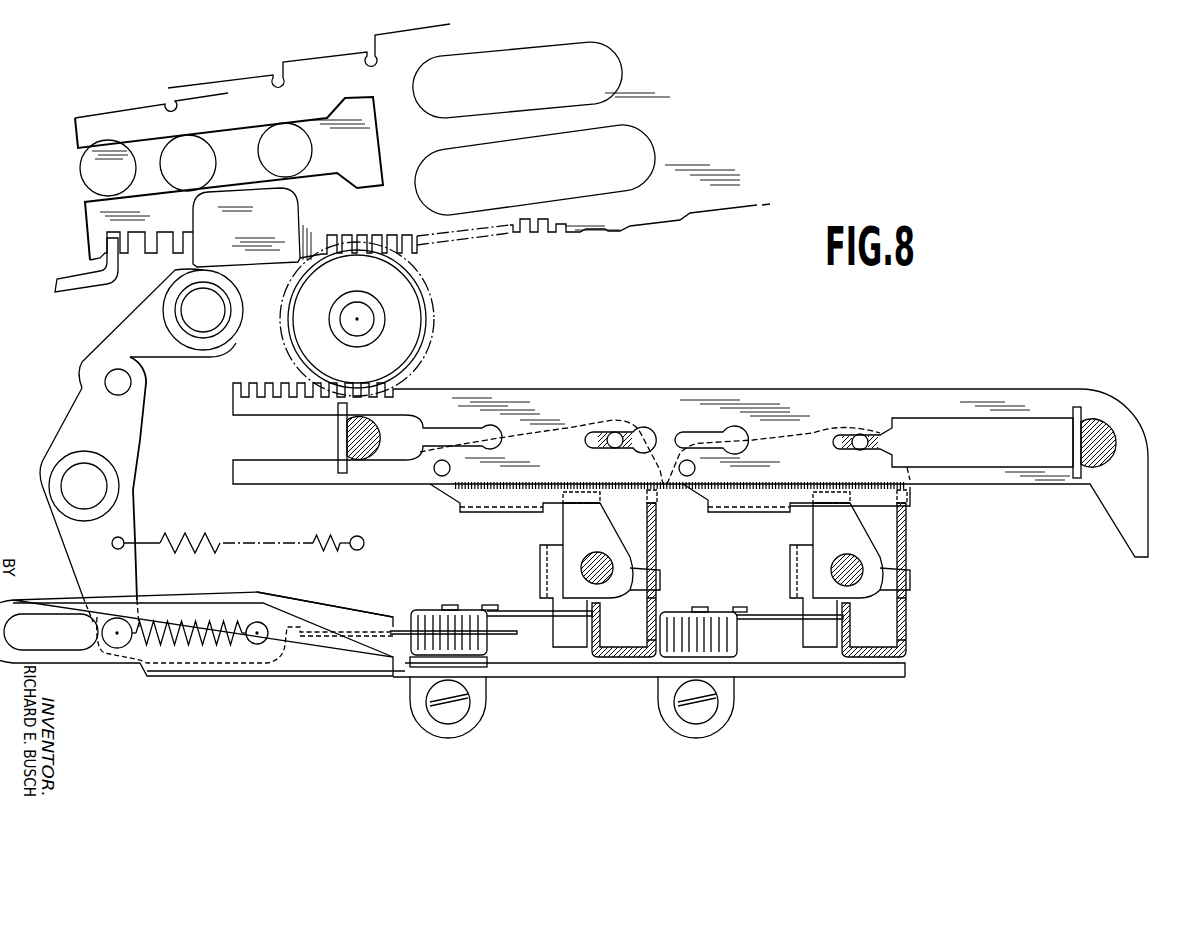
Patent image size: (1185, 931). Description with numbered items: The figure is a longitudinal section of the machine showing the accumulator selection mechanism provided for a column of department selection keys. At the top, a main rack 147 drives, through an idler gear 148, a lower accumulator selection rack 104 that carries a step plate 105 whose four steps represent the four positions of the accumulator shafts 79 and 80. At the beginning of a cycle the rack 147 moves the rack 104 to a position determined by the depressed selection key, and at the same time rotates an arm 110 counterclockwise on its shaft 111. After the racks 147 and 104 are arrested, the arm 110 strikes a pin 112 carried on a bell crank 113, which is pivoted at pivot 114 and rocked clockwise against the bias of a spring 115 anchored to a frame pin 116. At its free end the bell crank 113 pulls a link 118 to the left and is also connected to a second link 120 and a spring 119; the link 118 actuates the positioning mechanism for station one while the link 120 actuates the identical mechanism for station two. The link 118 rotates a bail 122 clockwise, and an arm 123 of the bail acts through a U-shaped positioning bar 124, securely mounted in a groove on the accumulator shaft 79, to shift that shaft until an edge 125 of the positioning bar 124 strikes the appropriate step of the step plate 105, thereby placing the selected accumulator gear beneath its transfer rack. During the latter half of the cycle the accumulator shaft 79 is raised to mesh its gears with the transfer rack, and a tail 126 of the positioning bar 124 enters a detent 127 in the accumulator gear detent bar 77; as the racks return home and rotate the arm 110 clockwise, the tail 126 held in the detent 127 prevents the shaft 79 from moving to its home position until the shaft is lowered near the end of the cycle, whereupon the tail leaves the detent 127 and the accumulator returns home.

The accumulator gear detent bar 77 is at (665, 533).
The accumulator shaft 79 is at (594, 556).
The accumulator shaft 80 is at (833, 566).
The lower accumulator selection rack 104 is at (920, 402).
The step plate 105 is at (453, 488).
The arm 110 is at (134, 323).
The shaft 111 is at (196, 321).
The pin 112 is at (133, 386).
The bell crank 113 is at (140, 447).
The pivot 114 is at (76, 497).
The spring 115 is at (204, 533).
The frame pin 116 is at (357, 536).
The link 118 is at (366, 611).
The spring 119 is at (163, 622).
The second link 120 is at (323, 674).
The bail 122 is at (432, 610).
The arm 123 is at (530, 610).
The U-shaped positioning bar 124 is at (538, 568).
The edge 125 is at (568, 513).
The tail 126 is at (661, 578).
The detent 127 is at (658, 597).
The main rack 147 is at (612, 229).
The idler gear 148 is at (434, 318).